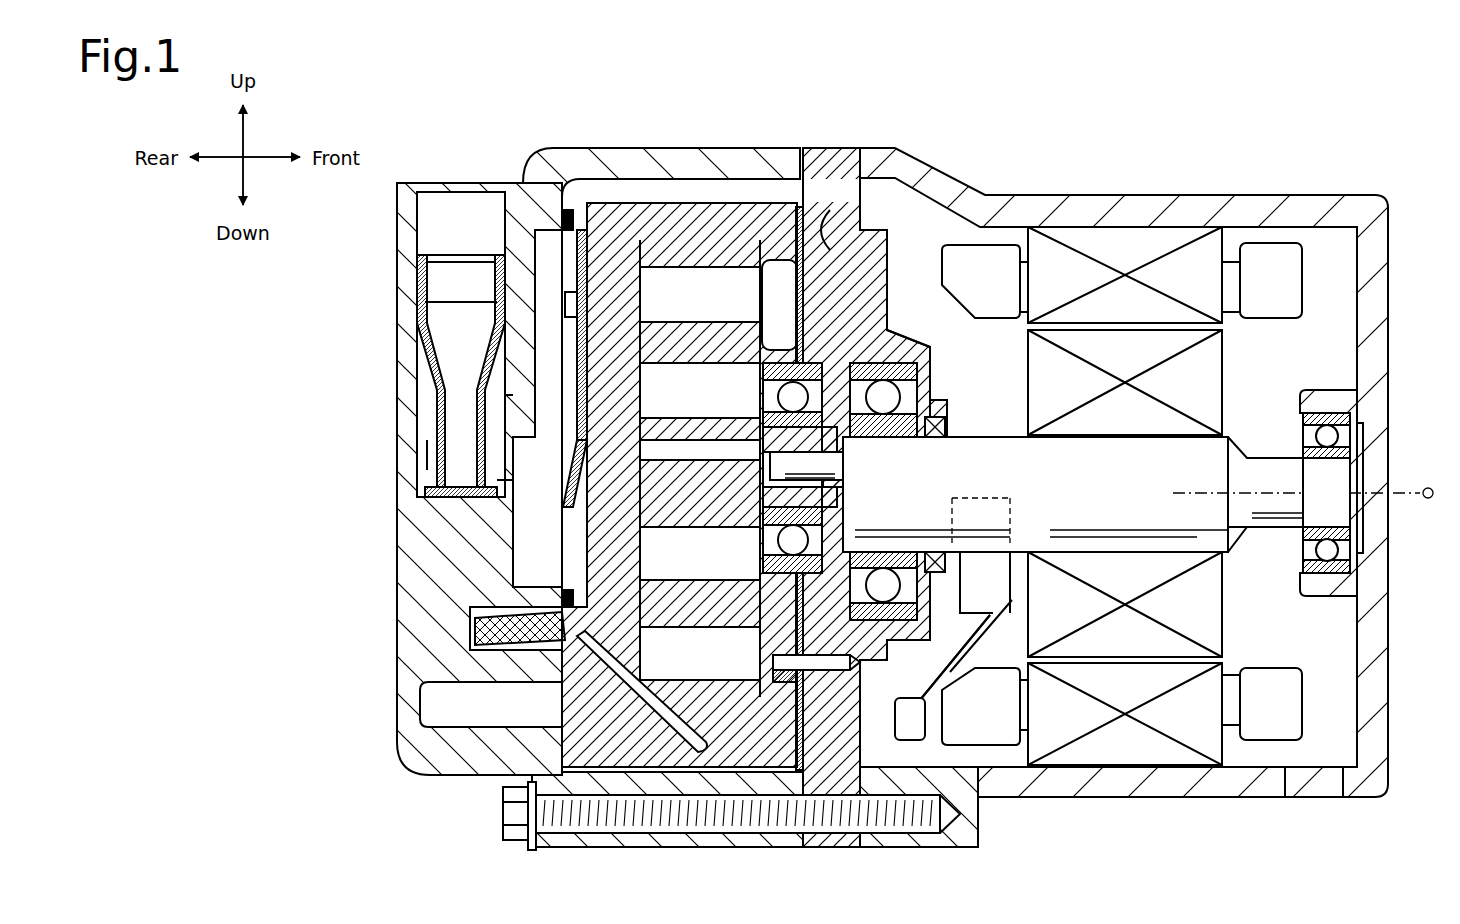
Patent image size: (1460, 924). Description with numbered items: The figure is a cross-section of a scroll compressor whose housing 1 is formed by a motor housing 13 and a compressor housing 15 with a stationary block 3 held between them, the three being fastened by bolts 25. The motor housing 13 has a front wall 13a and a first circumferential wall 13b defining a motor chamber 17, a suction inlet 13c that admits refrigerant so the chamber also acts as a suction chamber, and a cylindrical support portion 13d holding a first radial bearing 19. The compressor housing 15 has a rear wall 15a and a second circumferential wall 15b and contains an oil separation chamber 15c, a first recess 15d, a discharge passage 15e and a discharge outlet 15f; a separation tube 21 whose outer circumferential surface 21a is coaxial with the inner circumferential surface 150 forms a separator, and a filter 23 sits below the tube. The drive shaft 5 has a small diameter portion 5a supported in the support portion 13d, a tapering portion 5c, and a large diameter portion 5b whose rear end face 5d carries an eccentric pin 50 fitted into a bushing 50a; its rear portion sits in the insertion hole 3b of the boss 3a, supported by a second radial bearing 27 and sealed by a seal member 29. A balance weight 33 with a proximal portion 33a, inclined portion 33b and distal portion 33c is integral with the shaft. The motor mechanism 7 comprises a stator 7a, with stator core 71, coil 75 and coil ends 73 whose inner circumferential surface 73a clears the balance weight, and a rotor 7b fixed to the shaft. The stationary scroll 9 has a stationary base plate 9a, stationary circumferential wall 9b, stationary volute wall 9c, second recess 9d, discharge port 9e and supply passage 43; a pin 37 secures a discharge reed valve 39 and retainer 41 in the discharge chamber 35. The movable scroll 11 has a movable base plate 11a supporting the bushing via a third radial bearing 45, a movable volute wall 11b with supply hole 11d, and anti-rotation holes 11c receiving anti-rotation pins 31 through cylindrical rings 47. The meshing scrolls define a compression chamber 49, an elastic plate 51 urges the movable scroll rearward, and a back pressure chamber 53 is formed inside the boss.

The housing 1 is at (572, 130).
The stationary block 3 is at (843, 146).
The boss 3a is at (888, 332).
The insertion hole 3b is at (947, 440).
The drive shaft 5 is at (1255, 455).
The small diameter portion 5a is at (1338, 475).
The large diameter portion 5b is at (1118, 440).
The tapering portion 5c is at (1240, 555).
The rear end face 5d is at (835, 545).
The motor mechanism 7 is at (1230, 625).
The stator 7a is at (1112, 745).
The rotor 7b is at (1212, 370).
The stationary scroll 9 is at (642, 200).
The stationary base plate 9a is at (452, 262).
The stationary circumferential wall 9b is at (690, 215).
The stationary volute wall 9c is at (655, 330).
The second recess 9d is at (562, 216).
The discharge port 9e is at (610, 470).
The movable scroll 11 is at (722, 250).
The movable base plate 11a is at (755, 405).
The movable volute wall 11b is at (705, 352).
The anti-rotation holes 11c is at (750, 622).
The supply hole 11d is at (660, 545).
The motor housing 13 is at (1293, 193).
The front wall 13a is at (1380, 660).
The first circumferential wall 13b is at (1185, 785).
The suction inlet 13c is at (1292, 785).
The support portion 13d is at (1310, 395).
The compressor housing 15 is at (395, 680).
The rear wall 15a is at (400, 212).
The second circumferential wall 15b is at (642, 842).
The oil separation chamber 15c is at (445, 532).
The first recess 15d is at (462, 475).
The discharge passage 15e is at (430, 400).
The discharge outlet 15f is at (420, 186).
The inner circumferential surface 150 is at (442, 462).
The motor chamber 17 is at (985, 304).
The first radial bearing 19 is at (1326, 556).
The separation tube 21 is at (452, 330).
The outer circumferential surface 21a is at (440, 420).
The filter 23 is at (470, 638).
The bolts 25 is at (505, 812).
The second radial bearing 27 is at (905, 375).
The seal member 29 is at (940, 440).
The anti-rotation pins 31 is at (830, 640).
The balance weight 33 is at (1012, 580).
The proximal portion 33a is at (1000, 640).
The inclined portion 33b is at (915, 690).
The distal portion 33c is at (905, 730).
The discharge chamber 35 is at (529, 403).
The pin 37 is at (578, 305).
The discharge reed valve 39 is at (590, 465).
The retainer 41 is at (597, 420).
The supply passage 43 is at (612, 655).
The third radial bearing 45 is at (810, 358).
The cylindrical ring 47 is at (790, 645).
The compression chamber 49 is at (700, 559).
The eccentric pin 50 is at (848, 470).
The bushing 50a is at (846, 486).
The elastic plate 51 is at (830, 240).
The back pressure chamber 53 is at (880, 345).
The stator core 71 is at (1145, 750).
The coil ends 73 is at (1000, 735).
The inner circumferential surface 73a is at (945, 680).
The coil 75 is at (1330, 703).